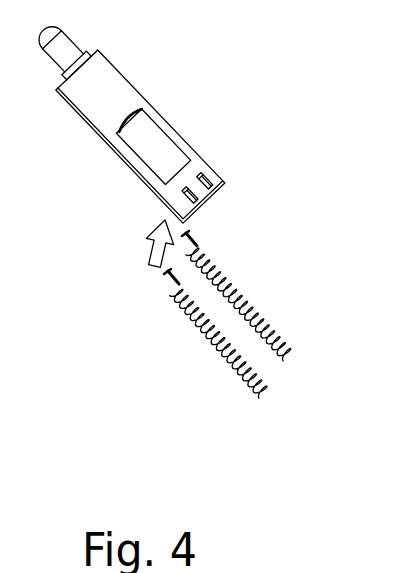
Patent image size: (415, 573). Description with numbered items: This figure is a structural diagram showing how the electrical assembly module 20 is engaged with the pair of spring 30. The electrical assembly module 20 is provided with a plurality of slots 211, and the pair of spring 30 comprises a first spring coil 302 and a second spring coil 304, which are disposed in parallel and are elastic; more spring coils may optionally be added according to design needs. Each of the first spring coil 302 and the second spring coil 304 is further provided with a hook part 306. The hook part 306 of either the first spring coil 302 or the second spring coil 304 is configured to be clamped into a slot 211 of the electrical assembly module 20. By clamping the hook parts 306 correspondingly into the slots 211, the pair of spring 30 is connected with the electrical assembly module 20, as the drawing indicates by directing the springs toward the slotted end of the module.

The electrical assembly module 20 is at (113, 88).
The slots 211 is at (207, 180).
The pair of spring 30 is at (216, 331).
The first spring coil 302 is at (221, 344).
The second spring coil 304 is at (257, 307).
The hook part 306 is at (193, 236).